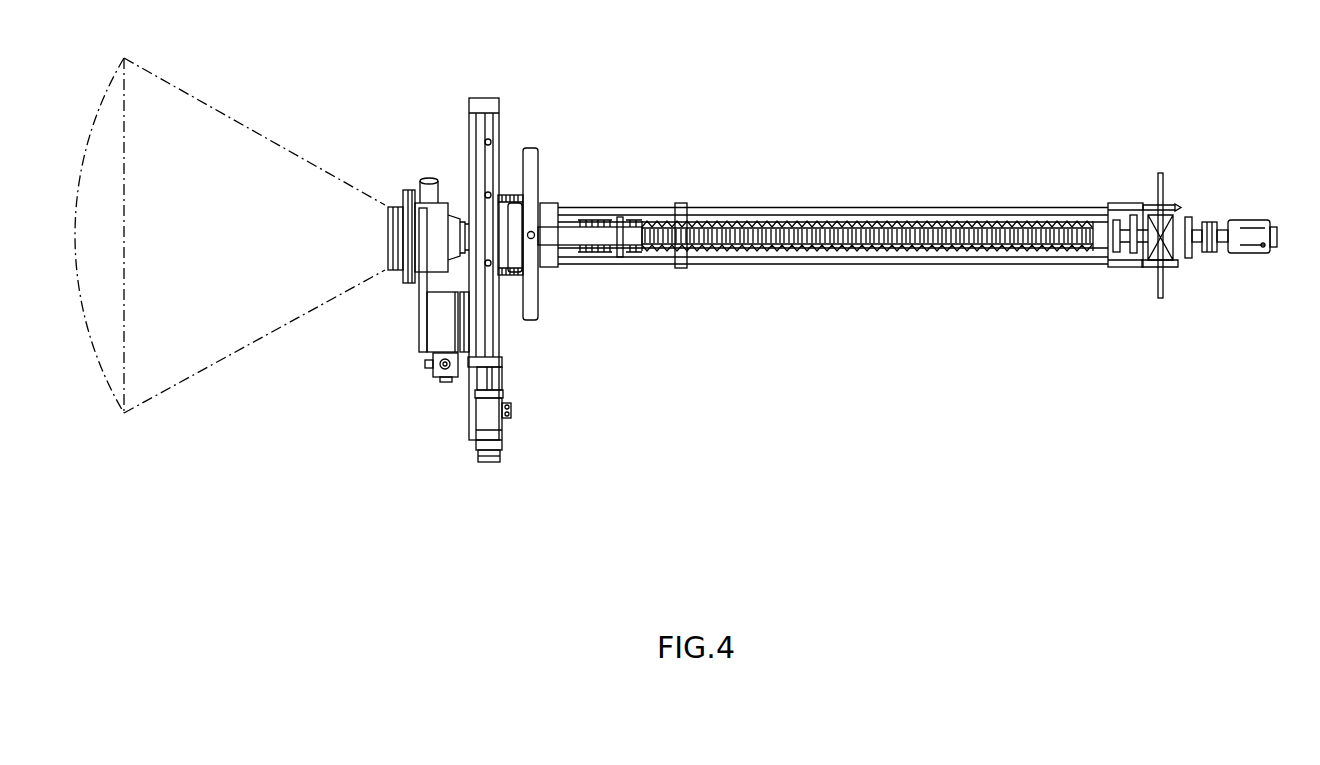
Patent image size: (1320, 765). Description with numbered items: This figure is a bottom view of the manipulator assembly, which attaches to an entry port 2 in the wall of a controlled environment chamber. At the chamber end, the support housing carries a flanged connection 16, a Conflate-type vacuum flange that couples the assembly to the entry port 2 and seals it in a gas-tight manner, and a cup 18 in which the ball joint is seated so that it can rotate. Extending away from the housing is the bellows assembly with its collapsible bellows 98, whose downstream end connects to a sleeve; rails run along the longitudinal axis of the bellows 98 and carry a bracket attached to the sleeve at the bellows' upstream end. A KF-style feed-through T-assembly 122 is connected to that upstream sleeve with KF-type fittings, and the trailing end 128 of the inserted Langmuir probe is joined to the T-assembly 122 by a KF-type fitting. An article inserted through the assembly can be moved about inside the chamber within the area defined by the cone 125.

The entry port 2 is at (392, 268).
The flanged connection 16 is at (415, 189).
The cup 18 is at (432, 217).
The collapsible bellows 98 is at (867, 237).
The KF-style feed-through T-assembly 122 is at (1141, 271).
The cone 125 is at (207, 368).
The trailing end 128 is at (1247, 255).